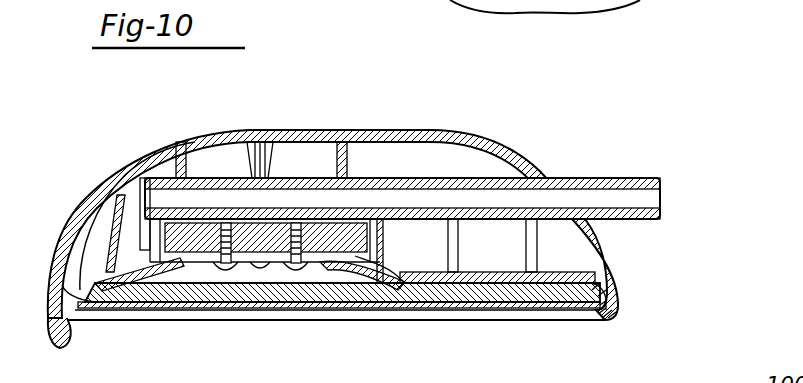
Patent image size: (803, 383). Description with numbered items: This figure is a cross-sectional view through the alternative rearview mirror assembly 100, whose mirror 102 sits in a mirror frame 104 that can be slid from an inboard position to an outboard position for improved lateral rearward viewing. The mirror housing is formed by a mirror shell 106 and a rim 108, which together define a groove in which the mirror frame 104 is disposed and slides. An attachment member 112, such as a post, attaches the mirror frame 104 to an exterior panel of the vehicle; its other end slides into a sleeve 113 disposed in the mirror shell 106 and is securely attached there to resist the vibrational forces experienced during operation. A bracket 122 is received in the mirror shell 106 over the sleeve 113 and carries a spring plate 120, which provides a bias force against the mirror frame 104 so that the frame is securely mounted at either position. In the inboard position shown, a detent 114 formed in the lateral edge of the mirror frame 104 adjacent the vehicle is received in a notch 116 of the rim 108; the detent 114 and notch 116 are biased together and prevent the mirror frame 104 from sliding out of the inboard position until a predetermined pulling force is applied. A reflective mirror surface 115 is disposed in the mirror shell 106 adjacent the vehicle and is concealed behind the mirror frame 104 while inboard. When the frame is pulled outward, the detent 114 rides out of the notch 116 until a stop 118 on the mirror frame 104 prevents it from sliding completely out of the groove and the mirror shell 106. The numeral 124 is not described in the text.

The rearview mirror assembly 100 is at (93, 136).
The mirror 102 is at (153, 305).
The mirror frame 104 is at (258, 266).
The mirror shell 106 is at (185, 133).
The rim 108 is at (620, 316).
The attachment member 112 is at (629, 178).
The sleeve 113 is at (298, 178).
The detent 114 is at (578, 312).
The reflective mirror surface 115 is at (500, 277).
The notch 116 is at (620, 293).
The stop 118 is at (376, 266).
The spring plate 120 is at (110, 280).
The bracket 122 is at (292, 300).
The bracket 124 is at (215, 264).